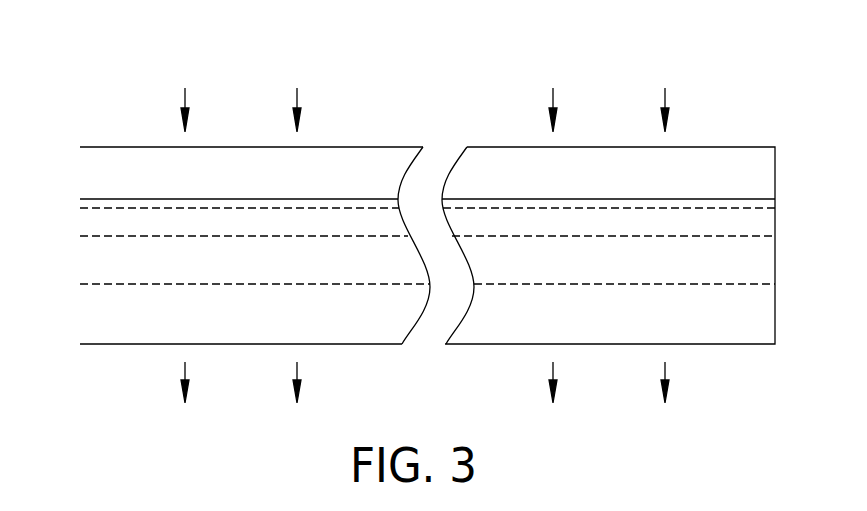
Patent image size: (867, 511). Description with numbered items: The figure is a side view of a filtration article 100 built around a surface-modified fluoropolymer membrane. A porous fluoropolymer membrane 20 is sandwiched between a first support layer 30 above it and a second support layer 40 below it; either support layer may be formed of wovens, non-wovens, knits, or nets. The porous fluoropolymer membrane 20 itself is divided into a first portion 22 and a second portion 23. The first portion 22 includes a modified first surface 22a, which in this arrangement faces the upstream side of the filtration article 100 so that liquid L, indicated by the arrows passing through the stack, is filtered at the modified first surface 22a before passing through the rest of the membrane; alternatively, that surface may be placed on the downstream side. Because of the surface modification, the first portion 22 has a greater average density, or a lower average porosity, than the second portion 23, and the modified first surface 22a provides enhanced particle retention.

The filtration article 100 is at (422, 225).
The first support layer 30 is at (777, 147).
The porous fluoropolymer membrane 20 is at (422, 204).
The first portion 22 is at (398, 180).
The modified first surface 22a is at (98, 204).
The second portion 23 is at (78, 236).
The second support layer 40 is at (777, 284).